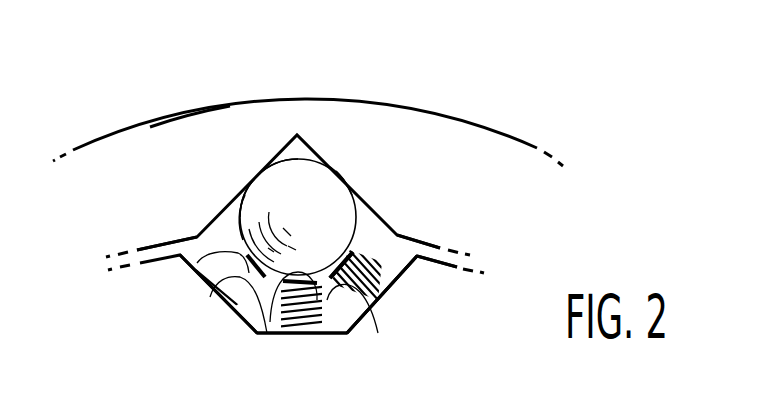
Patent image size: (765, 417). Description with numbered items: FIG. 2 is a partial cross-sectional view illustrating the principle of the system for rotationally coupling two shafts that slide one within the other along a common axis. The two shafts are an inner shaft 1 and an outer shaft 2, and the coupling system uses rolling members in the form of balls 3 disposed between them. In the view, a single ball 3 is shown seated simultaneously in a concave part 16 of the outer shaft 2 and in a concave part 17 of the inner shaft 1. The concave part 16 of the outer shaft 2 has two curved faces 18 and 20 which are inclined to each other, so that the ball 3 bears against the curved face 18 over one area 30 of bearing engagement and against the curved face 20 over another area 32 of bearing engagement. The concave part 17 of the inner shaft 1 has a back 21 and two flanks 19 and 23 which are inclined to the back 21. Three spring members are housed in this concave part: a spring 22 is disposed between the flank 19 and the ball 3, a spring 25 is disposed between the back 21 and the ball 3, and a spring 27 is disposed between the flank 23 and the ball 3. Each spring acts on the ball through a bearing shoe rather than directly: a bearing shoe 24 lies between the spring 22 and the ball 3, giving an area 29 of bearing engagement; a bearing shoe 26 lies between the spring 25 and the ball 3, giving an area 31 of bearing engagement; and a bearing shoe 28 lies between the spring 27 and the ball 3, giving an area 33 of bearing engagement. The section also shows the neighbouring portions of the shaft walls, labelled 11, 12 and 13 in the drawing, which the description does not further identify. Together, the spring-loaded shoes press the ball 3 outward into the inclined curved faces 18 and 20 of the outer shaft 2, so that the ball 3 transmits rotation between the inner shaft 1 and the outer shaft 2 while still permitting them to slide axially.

The inner shaft 1 is at (392, 352).
The outer shaft 2 is at (463, 150).
The ball 3 is at (292, 197).
The lower housing part 11 is at (460, 264).
The upper housing part 12 is at (447, 247).
The rim surface 13 is at (207, 108).
The concave part of the outer shaft 16 is at (303, 156).
The concave part of the inner shaft 17 is at (338, 322).
The curved face 18 is at (266, 164).
The flank 19 is at (250, 310).
The curved face 20 is at (341, 177).
The back 21 is at (313, 331).
The spring 22 is at (211, 296).
The flank 23 is at (358, 306).
The bearing shoe 24 is at (197, 264).
The spring 25 is at (275, 311).
The bearing shoe 26 is at (348, 334).
The spring 27 is at (380, 276).
The bearing shoe 28 is at (350, 253).
The area of bearing engagement 29 is at (250, 232).
The area of bearing engagement 30 is at (258, 172).
The area of bearing engagement 31 is at (258, 297).
The area of bearing engagement 32 is at (343, 177).
The area of bearing engagement 33 is at (343, 253).